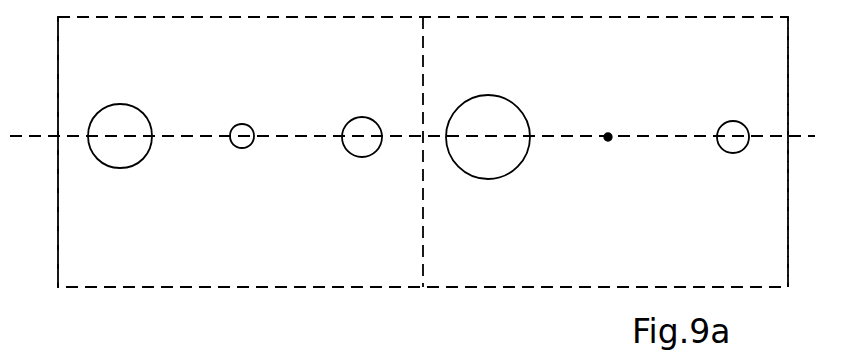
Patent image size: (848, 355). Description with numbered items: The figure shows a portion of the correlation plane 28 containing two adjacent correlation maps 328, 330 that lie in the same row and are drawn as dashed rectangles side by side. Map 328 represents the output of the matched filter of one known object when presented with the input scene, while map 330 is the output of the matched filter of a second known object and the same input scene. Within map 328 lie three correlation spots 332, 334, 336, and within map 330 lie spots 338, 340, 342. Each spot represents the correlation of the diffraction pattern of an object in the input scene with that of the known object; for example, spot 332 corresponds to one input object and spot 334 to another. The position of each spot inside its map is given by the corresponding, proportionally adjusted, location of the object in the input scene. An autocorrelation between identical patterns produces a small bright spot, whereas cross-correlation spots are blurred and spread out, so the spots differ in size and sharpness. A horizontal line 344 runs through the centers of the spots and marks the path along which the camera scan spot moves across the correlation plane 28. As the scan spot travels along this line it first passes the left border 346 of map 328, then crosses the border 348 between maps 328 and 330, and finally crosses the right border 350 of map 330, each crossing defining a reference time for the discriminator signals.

The correlation plane 28 is at (442, 287).
The correlation map 328 is at (266, 242).
The correlation map 330 is at (638, 242).
The correlation spot 332 is at (146, 120).
The correlation spot 334 is at (248, 126).
The correlation spot 336 is at (373, 122).
The correlation spot 338 is at (518, 116).
The correlation spot 340 is at (610, 133).
The correlation spot 342 is at (740, 126).
The horizontal line 344 is at (31, 135).
The left border 346 is at (60, 229).
The border 348 is at (423, 247).
The right border 350 is at (788, 247).